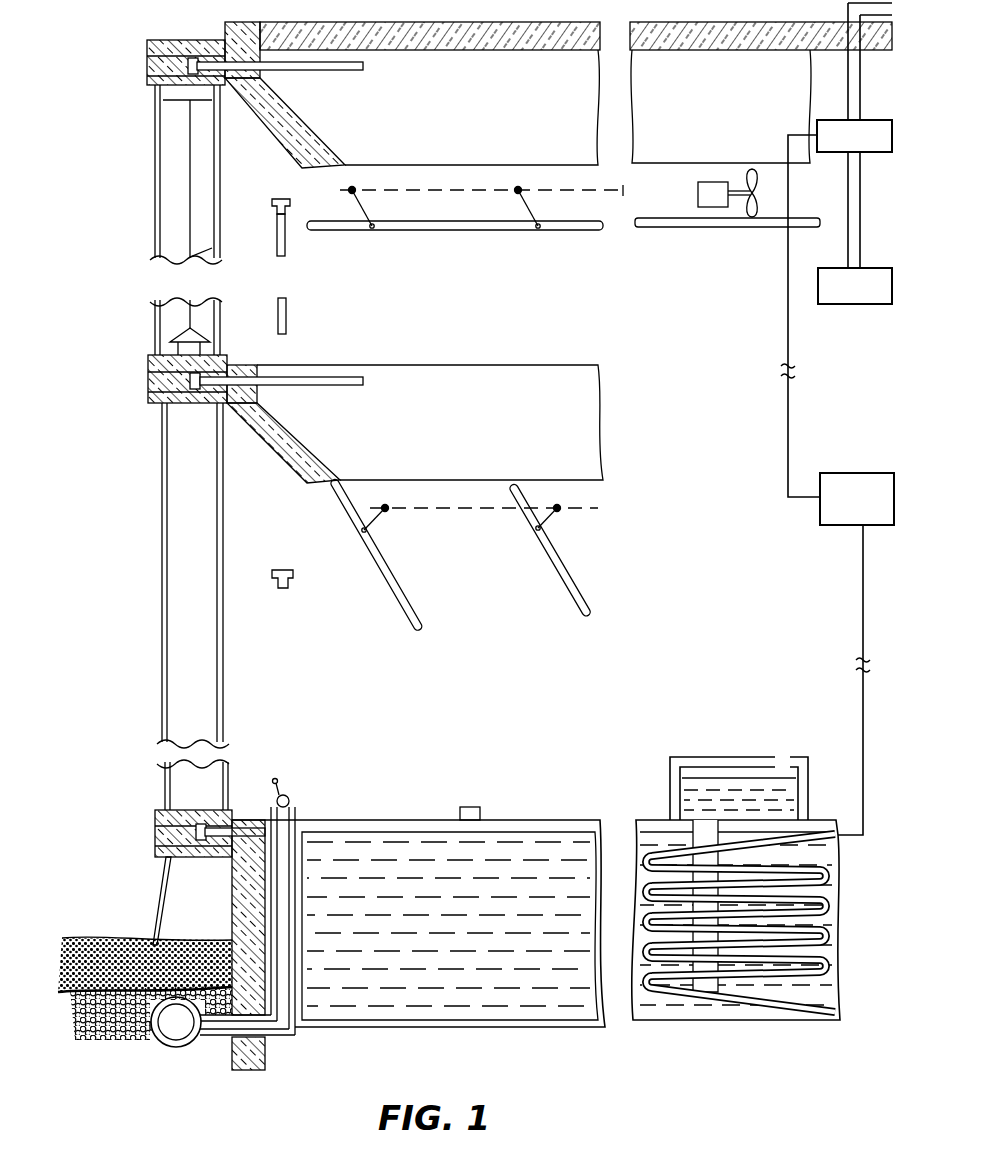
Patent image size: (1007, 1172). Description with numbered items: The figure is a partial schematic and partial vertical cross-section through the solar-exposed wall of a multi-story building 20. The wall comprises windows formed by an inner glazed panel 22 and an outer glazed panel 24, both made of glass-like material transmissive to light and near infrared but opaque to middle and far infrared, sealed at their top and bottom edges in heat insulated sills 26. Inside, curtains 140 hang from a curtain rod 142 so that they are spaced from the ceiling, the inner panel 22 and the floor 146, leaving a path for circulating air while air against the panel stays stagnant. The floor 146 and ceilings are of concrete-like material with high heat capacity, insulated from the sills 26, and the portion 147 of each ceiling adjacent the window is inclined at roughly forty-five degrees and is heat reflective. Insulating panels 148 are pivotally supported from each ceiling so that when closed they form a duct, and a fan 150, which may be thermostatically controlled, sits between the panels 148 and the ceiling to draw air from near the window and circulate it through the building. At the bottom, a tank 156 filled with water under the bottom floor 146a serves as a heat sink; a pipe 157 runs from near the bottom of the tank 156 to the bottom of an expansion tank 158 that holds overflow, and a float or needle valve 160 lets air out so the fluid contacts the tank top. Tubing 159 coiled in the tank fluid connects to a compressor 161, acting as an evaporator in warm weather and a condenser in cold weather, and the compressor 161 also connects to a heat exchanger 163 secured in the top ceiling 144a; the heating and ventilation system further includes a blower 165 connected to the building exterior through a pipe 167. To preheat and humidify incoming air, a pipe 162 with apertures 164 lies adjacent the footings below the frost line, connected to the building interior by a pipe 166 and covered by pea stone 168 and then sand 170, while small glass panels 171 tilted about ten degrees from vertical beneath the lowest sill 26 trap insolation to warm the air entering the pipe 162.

The building 20 is at (133, 232).
The inner glazed panel 22 is at (219, 182).
The outer glazed panel 24 is at (156, 186).
The heat insulated sill 26 is at (151, 44).
The curtain 140 is at (288, 303).
The curtain rod 142 is at (272, 206).
The top ceiling 144a is at (601, 173).
The floor 146 is at (518, 364).
The bottom floor 146a is at (425, 820).
The inclined ceiling portion 147 is at (316, 168).
The insulating panel 148 is at (470, 231).
The fan 150 is at (714, 208).
The tank 156 is at (518, 840).
The pipe 157 is at (690, 975).
The expansion tank 158 is at (688, 757).
The tubing 159 is at (647, 840).
The float or needle valve 160 is at (480, 807).
The compressor 161 is at (868, 512).
The pipe 162 is at (180, 1030).
The heat exchanger 163 is at (869, 148).
The apertures 164 is at (186, 998).
The blower 165 is at (870, 298).
The pipe 166 is at (283, 925).
The pipe 167 is at (849, 188).
The pea stone 168 is at (150, 1023).
The sand 170 is at (91, 985).
The small glass panels 171 is at (162, 893).